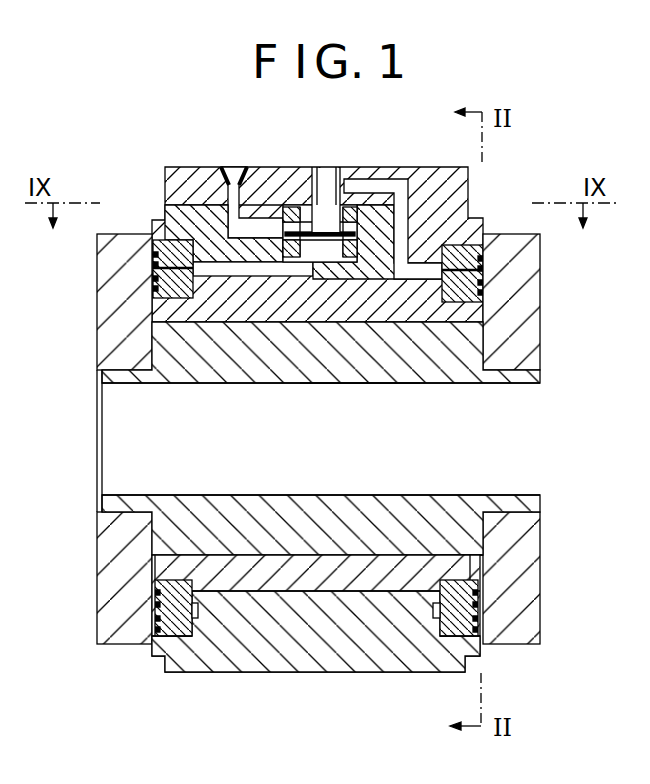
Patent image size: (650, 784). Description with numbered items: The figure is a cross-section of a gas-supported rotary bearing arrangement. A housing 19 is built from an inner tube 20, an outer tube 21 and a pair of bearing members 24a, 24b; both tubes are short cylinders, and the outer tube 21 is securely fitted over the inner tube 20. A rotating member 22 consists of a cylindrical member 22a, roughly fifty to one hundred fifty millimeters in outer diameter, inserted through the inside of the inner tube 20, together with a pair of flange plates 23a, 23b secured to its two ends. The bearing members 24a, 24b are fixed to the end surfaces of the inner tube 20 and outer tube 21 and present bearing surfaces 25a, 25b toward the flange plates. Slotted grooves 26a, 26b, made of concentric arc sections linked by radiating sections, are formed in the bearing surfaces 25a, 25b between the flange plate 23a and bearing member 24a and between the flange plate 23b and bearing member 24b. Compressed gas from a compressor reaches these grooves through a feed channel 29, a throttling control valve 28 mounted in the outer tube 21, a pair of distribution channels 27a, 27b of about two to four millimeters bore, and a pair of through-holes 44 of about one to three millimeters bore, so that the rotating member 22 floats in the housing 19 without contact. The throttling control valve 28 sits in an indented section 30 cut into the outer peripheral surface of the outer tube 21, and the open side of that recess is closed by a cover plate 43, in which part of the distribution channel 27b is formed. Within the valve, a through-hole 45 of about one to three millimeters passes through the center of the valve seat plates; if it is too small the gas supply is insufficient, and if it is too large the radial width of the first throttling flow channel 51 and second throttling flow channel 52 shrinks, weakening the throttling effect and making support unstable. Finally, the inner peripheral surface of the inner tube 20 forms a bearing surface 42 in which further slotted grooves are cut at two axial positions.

The housing 19 is at (372, 673).
The inner tube 20 is at (332, 575).
The outer tube 21 is at (402, 673).
The rotating member 22 is at (278, 548).
The cylindrical member 22a is at (140, 502).
The flange plate 23a is at (114, 638).
The flange plate 23b is at (532, 620).
The bearing member 24a is at (177, 634).
The bearing member 24b is at (447, 634).
The bearing surface 25a is at (158, 603).
The bearing surface 25b is at (478, 592).
The slotted groove 26a is at (155, 270).
The slotted groove 26b is at (483, 268).
The distribution channel 27a is at (232, 276).
The distribution channel 27b is at (403, 240).
The throttling control valve 28 is at (302, 206).
The feed channel 29 is at (228, 232).
The indented section 30 is at (348, 190).
The bearing surface 42 is at (455, 548).
The cover plate 43 is at (465, 185).
The through-hole 44 is at (157, 285).
The through-hole 45 is at (318, 210).
The first throttling flow channel 51 is at (323, 215).
The second throttling flow channel 52 is at (330, 384).